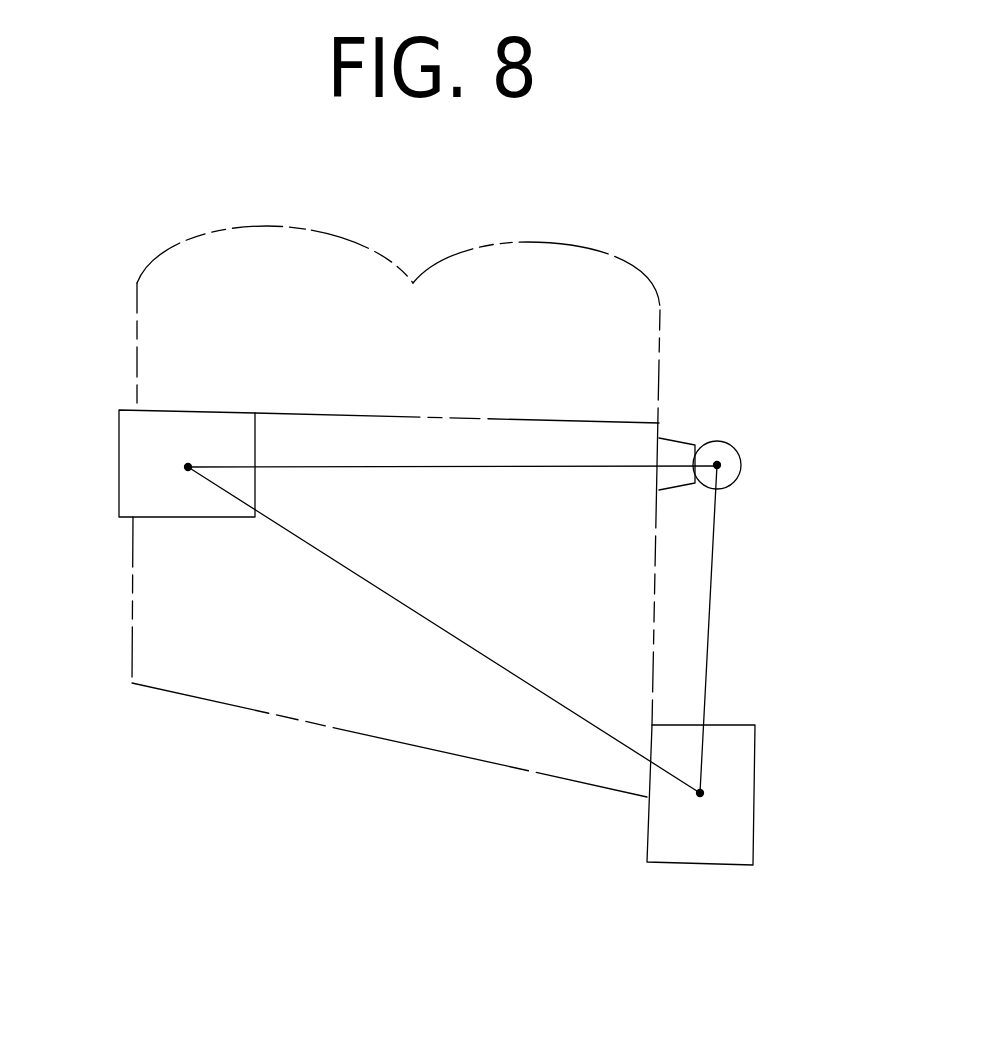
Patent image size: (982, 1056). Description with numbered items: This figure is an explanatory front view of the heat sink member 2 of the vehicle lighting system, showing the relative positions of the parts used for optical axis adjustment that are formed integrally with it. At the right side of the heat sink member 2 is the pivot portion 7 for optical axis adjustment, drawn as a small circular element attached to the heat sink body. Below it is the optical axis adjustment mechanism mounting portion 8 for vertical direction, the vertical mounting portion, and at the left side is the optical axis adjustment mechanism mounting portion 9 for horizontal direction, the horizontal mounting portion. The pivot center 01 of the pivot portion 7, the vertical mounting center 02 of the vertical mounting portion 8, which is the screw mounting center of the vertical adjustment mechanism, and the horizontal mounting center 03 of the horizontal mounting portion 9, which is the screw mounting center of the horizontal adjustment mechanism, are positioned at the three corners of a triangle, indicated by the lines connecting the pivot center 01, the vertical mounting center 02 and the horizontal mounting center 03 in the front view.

The heat sink member 2 is at (627, 271).
The optical axis adjustment mechanism mounting portion for horizontal direction 9 is at (137, 425).
The pivot portion for optical axis adjustment 7 is at (742, 453).
The optical axis adjustment mechanism mounting portion for vertical direction 8 is at (743, 725).
The center of the pivot portion 01 is at (717, 462).
The center of the vertical mounting portion 02 is at (703, 793).
The center of the horizontal mounting portion 03 is at (186, 468).